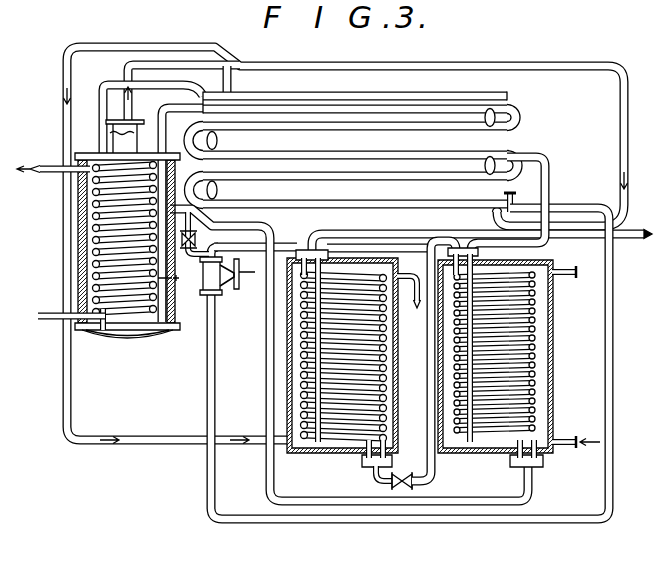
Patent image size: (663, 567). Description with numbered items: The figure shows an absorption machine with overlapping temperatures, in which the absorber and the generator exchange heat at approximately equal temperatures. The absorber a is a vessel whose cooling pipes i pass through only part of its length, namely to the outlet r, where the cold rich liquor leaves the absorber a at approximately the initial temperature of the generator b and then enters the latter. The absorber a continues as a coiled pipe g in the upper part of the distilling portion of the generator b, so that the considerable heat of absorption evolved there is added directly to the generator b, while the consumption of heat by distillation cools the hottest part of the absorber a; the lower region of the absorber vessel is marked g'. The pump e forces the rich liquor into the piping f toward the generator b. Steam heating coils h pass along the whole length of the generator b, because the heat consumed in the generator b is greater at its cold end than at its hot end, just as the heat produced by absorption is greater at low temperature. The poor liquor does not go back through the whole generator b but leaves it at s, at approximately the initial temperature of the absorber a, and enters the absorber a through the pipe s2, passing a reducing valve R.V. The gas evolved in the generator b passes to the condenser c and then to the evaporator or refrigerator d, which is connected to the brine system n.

The absorber a is at (353, 152).
The generator b is at (172, 186).
The condenser c is at (346, 276).
The evaporator or refrigerator d is at (512, 354).
The pump e is at (226, 280).
The piping f is at (275, 249).
The coiled pipe g is at (84, 239).
The bottom of absorber g' is at (127, 343).
The steam heating coils h is at (58, 173).
The cooling pipes i is at (135, 47).
The brine system n is at (567, 449).
The rich liquor outlet r is at (199, 101).
The poor liquor outlet s is at (194, 232).
The pipe s2 is at (104, 81).
The reducing valve R.V. is at (291, 364).